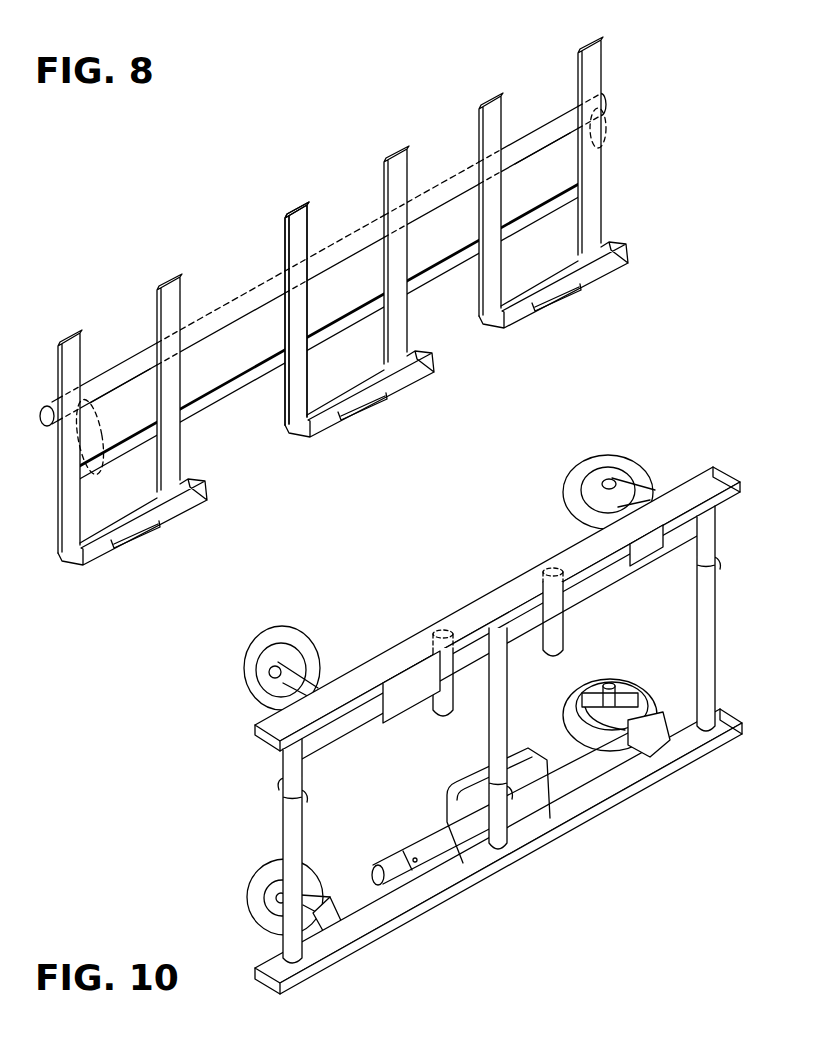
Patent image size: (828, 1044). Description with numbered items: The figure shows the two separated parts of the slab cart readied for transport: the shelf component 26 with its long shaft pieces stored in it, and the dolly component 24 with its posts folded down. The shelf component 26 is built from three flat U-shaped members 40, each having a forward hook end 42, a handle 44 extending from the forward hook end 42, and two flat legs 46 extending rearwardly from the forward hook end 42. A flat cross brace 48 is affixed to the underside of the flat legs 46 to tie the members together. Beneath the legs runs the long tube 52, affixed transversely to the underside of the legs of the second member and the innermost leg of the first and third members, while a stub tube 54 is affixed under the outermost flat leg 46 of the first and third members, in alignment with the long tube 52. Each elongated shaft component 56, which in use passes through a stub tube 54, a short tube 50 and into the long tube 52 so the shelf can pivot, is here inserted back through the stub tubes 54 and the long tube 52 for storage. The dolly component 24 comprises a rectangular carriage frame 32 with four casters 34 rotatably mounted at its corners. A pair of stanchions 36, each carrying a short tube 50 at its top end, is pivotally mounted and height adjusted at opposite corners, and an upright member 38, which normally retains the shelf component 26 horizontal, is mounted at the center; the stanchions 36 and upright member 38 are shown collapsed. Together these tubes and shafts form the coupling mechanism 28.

In FIG. 10, the dolly component 24 is at (255, 742).
In FIG. 8, the shelf component 26 is at (276, 245).
In FIG. 8, the coupling mechanism 28 is at (40, 432).
In FIG. 10, the rectangular carriage frame 32 is at (658, 790).
In FIG. 10, the caster 34 is at (630, 455).
In FIG. 10, the stanchion 36 is at (704, 603).
In FIG. 10, the upright member 38 is at (422, 838).
In FIG. 8, the flat U-shaped member 40 is at (150, 292).
In FIG. 8, the forward hook end 42 is at (62, 557).
In FIG. 8, the handle 44 is at (150, 535).
In FIG. 8, the flat leg 46 is at (70, 350).
In FIG. 8, the flat cross brace 48 is at (235, 392).
In FIG. 10, the short tube 50 is at (443, 712).
In FIG. 8, the long tube 52 is at (225, 326).
In FIG. 8, the stub tube 54 is at (102, 473).
In FIG. 8, the elongated shaft component 56 is at (107, 382).